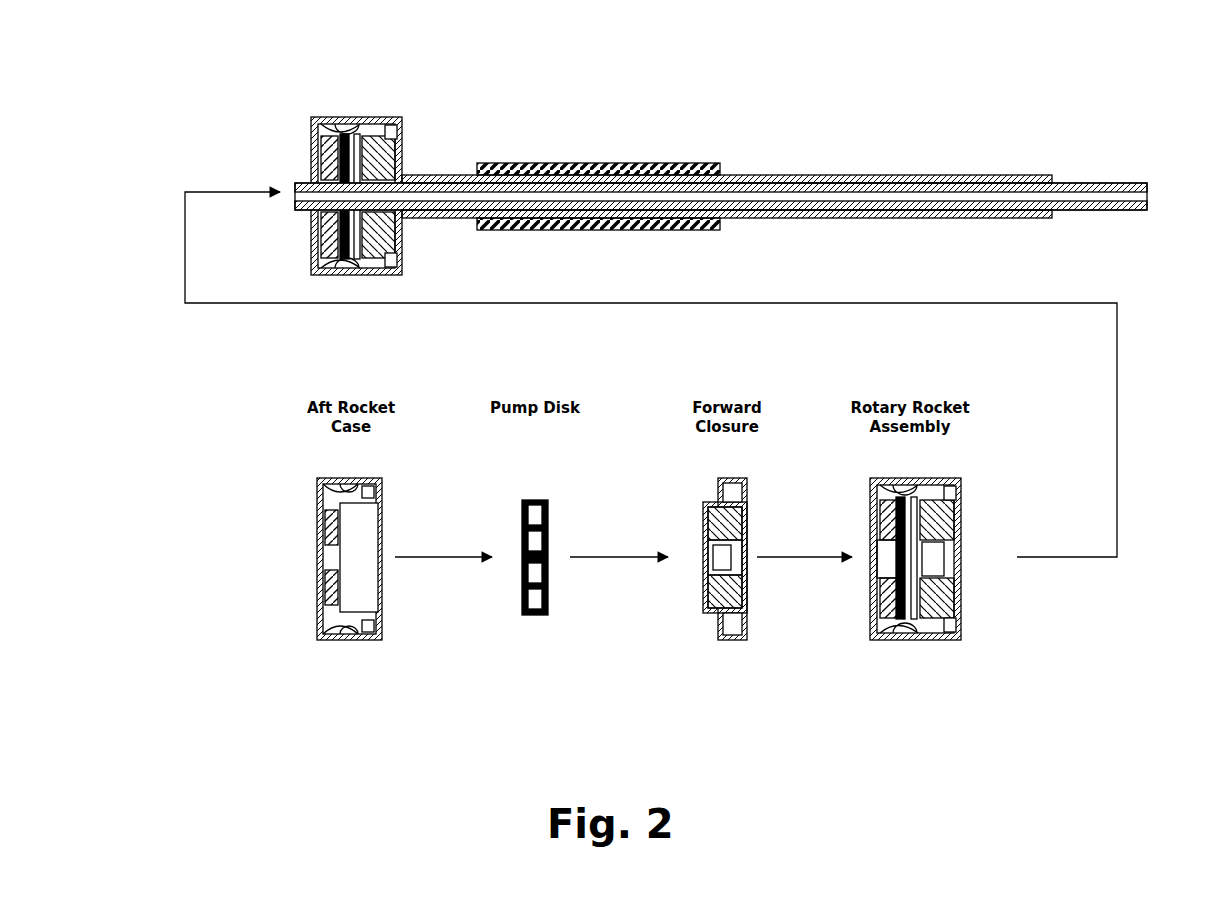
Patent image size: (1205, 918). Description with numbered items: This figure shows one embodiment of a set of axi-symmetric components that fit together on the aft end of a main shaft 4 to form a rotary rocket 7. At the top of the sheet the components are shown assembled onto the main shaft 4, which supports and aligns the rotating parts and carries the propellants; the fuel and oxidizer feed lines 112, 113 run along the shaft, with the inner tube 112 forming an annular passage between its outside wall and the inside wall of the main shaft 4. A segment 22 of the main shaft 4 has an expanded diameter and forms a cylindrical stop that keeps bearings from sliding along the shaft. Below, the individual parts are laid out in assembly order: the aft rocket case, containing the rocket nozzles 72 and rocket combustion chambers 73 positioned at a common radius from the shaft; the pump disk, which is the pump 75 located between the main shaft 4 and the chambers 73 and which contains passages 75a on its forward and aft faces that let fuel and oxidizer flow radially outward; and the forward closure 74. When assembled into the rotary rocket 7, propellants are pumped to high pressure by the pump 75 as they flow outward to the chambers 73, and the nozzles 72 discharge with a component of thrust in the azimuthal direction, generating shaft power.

The rotary rocket 7 is at (352, 122).
The segment of the main shaft 22 is at (662, 164).
The main shaft 4 is at (762, 174).
The inner tube 112 is at (1109, 184).
The fuel and oxidizer feed line 113 is at (1045, 218).
The rocket nozzles 72 is at (322, 628).
The rocket combustion chambers 73 is at (352, 638).
The forward closure 74 is at (742, 638).
The pump 75 is at (537, 631).
The passages 75a is at (525, 611).